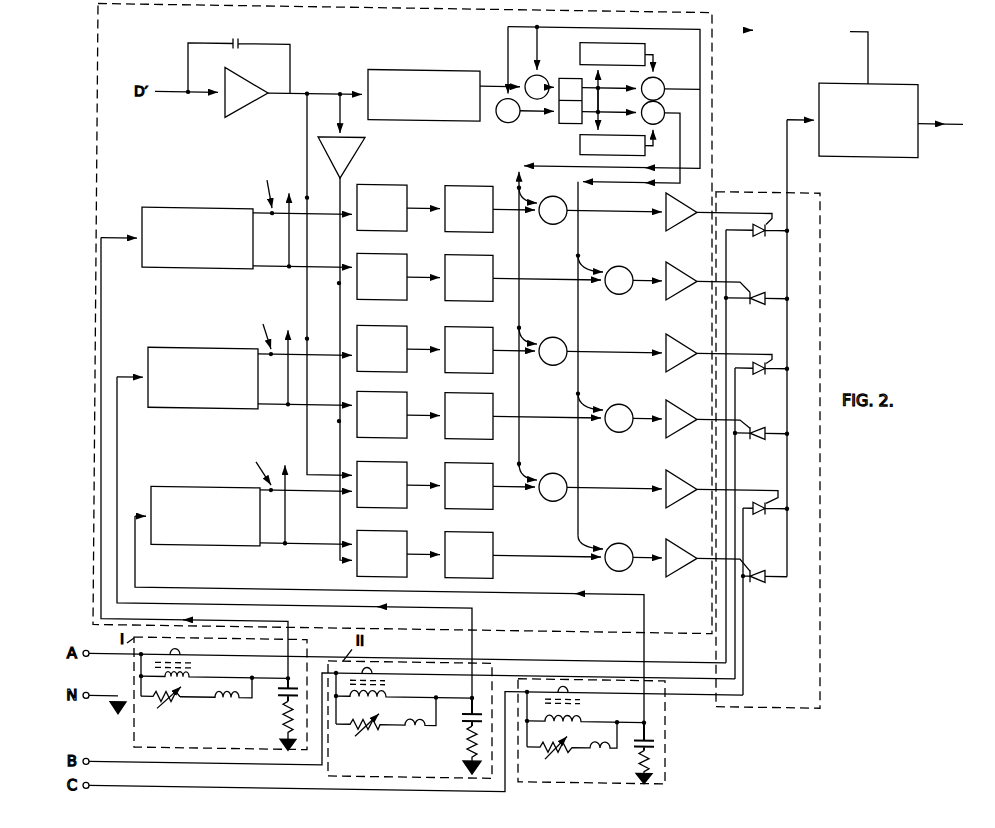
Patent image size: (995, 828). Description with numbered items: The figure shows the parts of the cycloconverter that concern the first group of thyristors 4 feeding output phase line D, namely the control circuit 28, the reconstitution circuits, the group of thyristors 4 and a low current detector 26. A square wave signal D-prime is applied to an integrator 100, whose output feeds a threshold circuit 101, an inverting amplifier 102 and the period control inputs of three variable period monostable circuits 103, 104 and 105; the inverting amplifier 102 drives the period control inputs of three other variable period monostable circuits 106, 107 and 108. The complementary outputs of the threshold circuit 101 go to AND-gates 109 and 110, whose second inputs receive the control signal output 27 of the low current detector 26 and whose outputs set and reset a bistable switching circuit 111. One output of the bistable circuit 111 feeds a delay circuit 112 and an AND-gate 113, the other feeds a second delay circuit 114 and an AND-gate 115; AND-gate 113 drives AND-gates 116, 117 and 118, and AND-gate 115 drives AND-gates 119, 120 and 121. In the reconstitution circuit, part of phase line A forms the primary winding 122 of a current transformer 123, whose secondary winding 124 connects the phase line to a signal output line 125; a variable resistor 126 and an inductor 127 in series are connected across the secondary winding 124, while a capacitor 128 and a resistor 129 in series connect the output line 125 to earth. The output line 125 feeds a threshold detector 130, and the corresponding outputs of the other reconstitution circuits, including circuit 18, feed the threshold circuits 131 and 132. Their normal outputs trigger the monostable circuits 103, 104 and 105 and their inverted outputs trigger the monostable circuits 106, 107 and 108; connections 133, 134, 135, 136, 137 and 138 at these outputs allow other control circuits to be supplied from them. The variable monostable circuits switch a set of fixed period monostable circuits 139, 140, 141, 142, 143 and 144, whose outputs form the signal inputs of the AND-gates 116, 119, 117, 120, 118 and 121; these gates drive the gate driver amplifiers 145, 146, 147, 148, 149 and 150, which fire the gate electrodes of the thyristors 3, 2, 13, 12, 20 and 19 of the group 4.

The thyristor 2 is at (743, 303).
The thyristor 3 is at (743, 231).
The group of thyristors 4 is at (821, 592).
The thyristor 12 is at (743, 441).
The thyristor 13 is at (743, 375).
The reconstitution circuit 18 is at (665, 746).
The thyristor 19 is at (742, 585).
The thyristor 20 is at (743, 513).
The low current detector 26 is at (818, 92).
The control signal output 27 is at (850, 25).
The control circuit 28 is at (714, 10).
The integrator 100 is at (243, 110).
The threshold circuit 101 is at (403, 70).
The inverting amplifier 102 is at (358, 150).
The variable period monostable circuit 103 is at (400, 185).
The variable period monostable circuit 104 is at (405, 329).
The variable period monostable circuit 105 is at (407, 468).
The variable period monostable circuit 106 is at (357, 261).
The variable period monostable circuit 107 is at (407, 397).
The variable period monostable circuit 108 is at (407, 538).
The AND-gate 109 is at (546, 75).
The AND-gate 110 is at (512, 121).
The bistable switching circuit 111 is at (564, 122).
The delay circuit 112 is at (646, 45).
The AND-gate 113 is at (664, 80).
The second delay circuit 114 is at (581, 149).
The AND-gate 115 is at (665, 107).
The AND-gate 116 is at (553, 194).
The AND-gate 117 is at (556, 335).
The AND-gate 118 is at (556, 471).
The AND-gate 119 is at (626, 264).
The AND-gate 120 is at (624, 402).
The AND-gate 121 is at (626, 541).
The primary winding 122 is at (182, 657).
The current transformer 123 is at (190, 677).
The secondary winding 124 is at (141, 680).
The signal output line 125 is at (288, 677).
The variable resistor 126 is at (161, 707).
The inductor 127 is at (216, 700).
The capacitor 128 is at (280, 700).
The resistor 129 is at (282, 735).
The threshold detector 130 is at (190, 211).
The threshold circuit 131 is at (210, 351).
The threshold circuit 132 is at (165, 490).
The connection 133 is at (262, 188).
The connection 134 is at (275, 231).
The connection 135 is at (258, 330).
The connection 136 is at (283, 400).
The connection 137 is at (250, 466).
The connection 138 is at (286, 534).
The fixed period monostable circuit 139 is at (470, 185).
The fixed period monostable circuit 140 is at (493, 262).
The fixed period monostable circuit 141 is at (490, 330).
The fixed period monostable circuit 142 is at (493, 398).
The fixed period monostable circuit 143 is at (493, 468).
The fixed period monostable circuit 144 is at (493, 539).
The gate driver amplifier 145 is at (680, 220).
The gate driver amplifier 146 is at (677, 268).
The gate driver amplifier 147 is at (678, 339).
The gate driver amplifier 148 is at (677, 404).
The gate driver amplifier 149 is at (677, 470).
The gate driver amplifier 150 is at (677, 540).